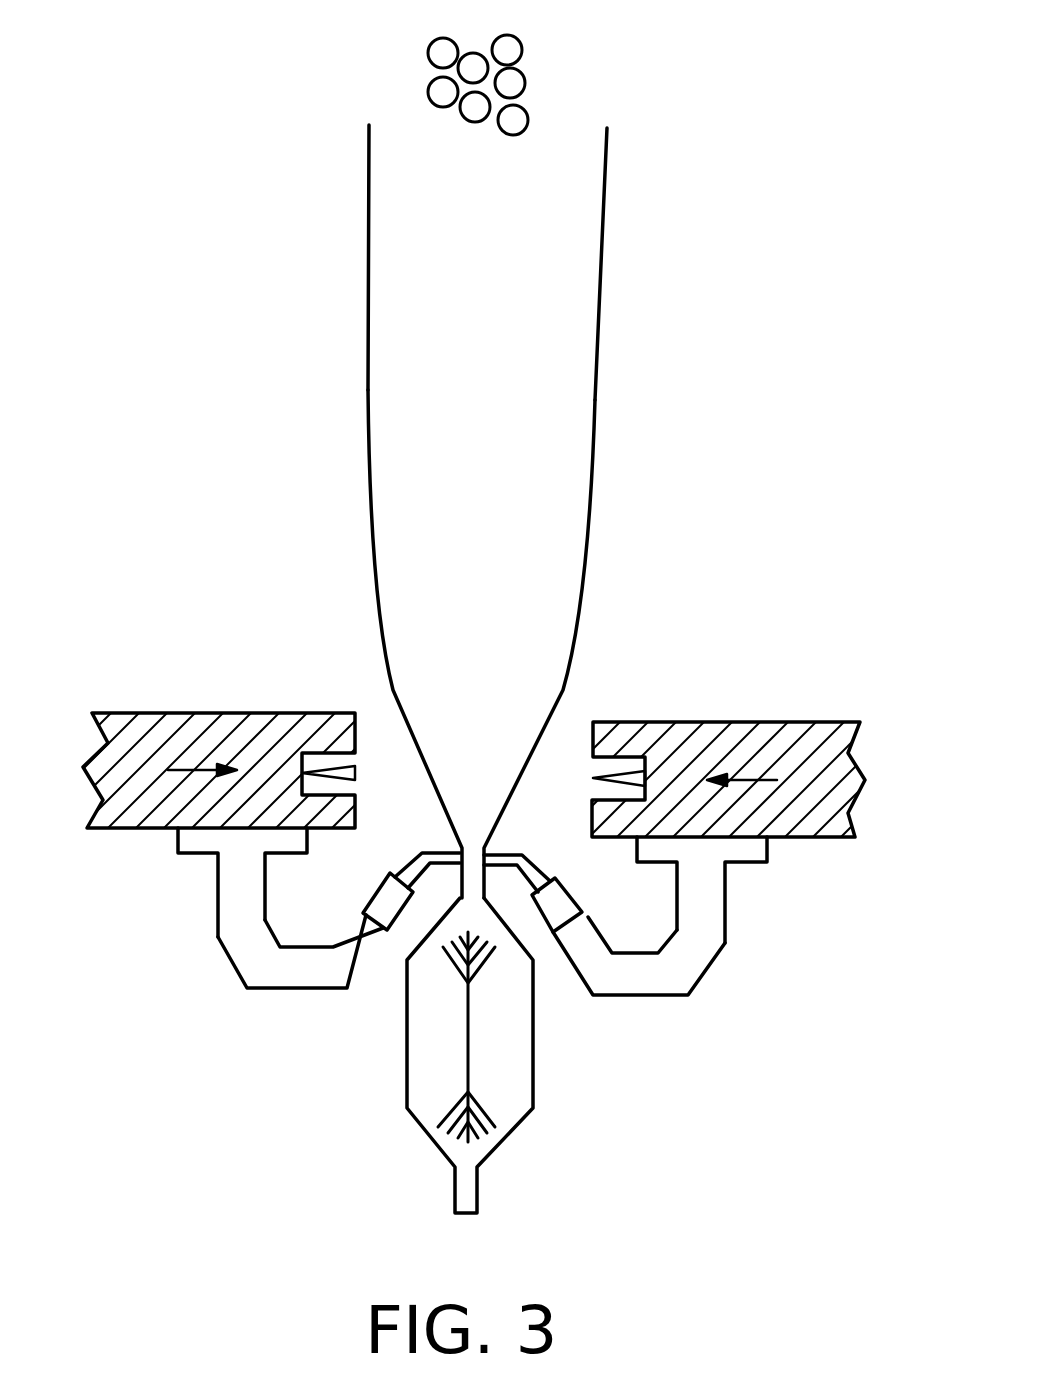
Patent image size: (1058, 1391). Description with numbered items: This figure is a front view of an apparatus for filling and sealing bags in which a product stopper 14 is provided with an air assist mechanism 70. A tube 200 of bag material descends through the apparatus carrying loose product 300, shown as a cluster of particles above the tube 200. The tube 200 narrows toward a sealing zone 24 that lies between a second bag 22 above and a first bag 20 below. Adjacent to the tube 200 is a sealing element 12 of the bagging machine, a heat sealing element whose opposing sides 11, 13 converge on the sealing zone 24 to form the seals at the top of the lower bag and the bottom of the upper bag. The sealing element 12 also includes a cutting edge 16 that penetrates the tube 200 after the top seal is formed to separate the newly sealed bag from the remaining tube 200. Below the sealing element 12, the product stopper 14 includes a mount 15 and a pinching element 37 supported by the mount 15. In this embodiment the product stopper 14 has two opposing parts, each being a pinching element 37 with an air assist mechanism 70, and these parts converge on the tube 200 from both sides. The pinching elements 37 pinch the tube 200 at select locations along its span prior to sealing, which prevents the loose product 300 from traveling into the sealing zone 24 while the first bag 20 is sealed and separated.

The loose product 300 is at (562, 48).
The tube 200 is at (565, 230).
The second bag 22 is at (535, 637).
The sealing zone 24 is at (470, 732).
The opposing side of sealing element 11 is at (353, 724).
The opposing side of sealing element 13 is at (592, 726).
The sealing element 12 is at (150, 740).
The cutting edge 16 is at (690, 720).
The mount 15 is at (235, 908).
The product stopper 14 is at (293, 990).
The pinching element 37 is at (385, 897).
The air assist mechanism 70 is at (390, 932).
The first bag 20 is at (508, 1077).